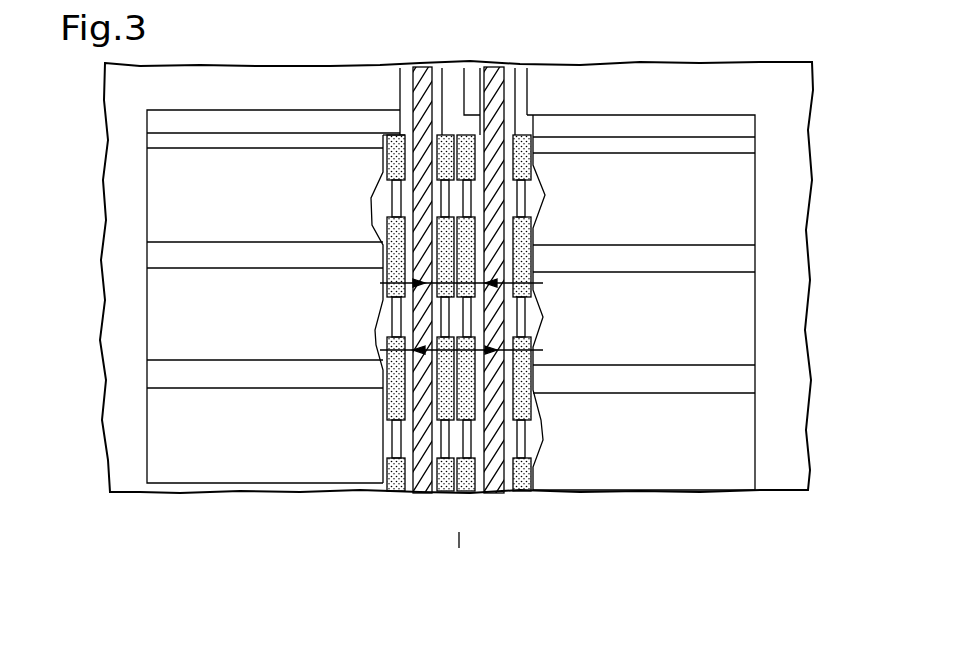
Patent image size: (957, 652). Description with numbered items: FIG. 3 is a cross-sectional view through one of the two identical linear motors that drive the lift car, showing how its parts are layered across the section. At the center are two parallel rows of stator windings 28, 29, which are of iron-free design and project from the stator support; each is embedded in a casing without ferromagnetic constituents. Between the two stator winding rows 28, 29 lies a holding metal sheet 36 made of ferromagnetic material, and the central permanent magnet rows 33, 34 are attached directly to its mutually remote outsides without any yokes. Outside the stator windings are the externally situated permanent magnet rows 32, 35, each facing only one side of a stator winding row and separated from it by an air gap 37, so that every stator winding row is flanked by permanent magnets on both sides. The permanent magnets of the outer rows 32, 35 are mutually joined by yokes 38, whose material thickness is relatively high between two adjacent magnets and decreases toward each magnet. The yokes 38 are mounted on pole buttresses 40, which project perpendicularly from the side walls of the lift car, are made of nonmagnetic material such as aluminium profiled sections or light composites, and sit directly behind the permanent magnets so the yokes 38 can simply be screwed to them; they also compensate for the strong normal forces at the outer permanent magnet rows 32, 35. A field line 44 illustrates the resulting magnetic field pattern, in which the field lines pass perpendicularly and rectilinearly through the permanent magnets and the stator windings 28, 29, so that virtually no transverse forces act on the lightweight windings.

The stator winding 28 is at (497, 88).
The stator winding 29 is at (423, 83).
The permanent magnet row 32 is at (520, 147).
The permanent magnet row 33 is at (472, 147).
The permanent magnet row 34 is at (445, 145).
The permanent magnet row 35 is at (397, 147).
The holding metal sheet 36 is at (477, 488).
The air gap 37 is at (400, 478).
The yoke 38 is at (377, 443).
The pole buttress 40 is at (652, 143).
The field line 44 is at (543, 315).